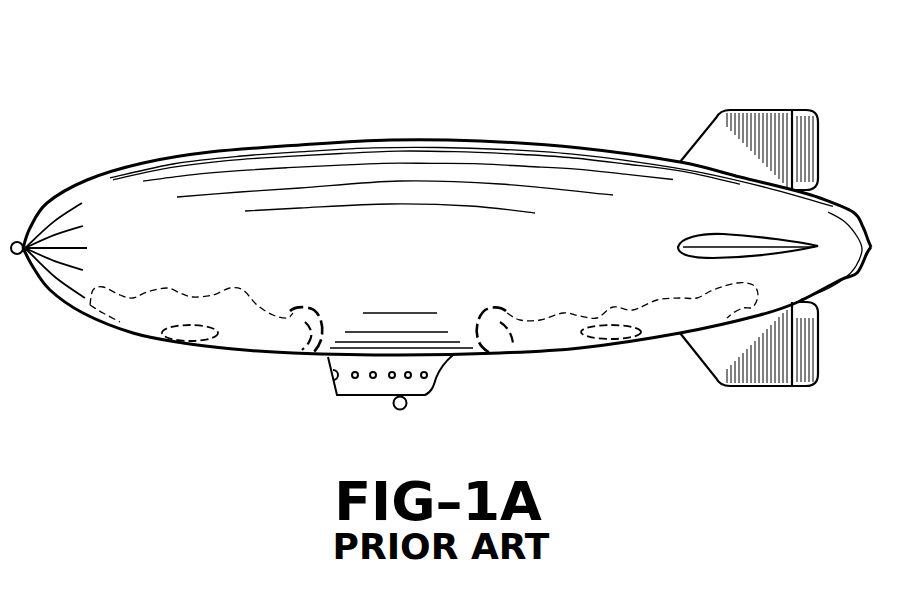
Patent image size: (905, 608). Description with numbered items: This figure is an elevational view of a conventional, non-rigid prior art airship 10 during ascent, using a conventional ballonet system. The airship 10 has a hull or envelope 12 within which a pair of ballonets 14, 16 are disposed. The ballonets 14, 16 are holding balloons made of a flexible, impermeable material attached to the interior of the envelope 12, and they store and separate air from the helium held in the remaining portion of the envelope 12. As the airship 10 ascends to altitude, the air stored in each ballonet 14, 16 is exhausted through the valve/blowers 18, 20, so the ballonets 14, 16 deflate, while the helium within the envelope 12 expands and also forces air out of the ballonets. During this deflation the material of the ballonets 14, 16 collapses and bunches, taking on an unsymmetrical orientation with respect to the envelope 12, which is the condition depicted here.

The airship 10 is at (127, 111).
The envelope 12 is at (403, 160).
The ballonet 14 is at (307, 365).
The ballonet 16 is at (496, 365).
The valve/blower 18 is at (194, 331).
The valve/blower 20 is at (602, 340).